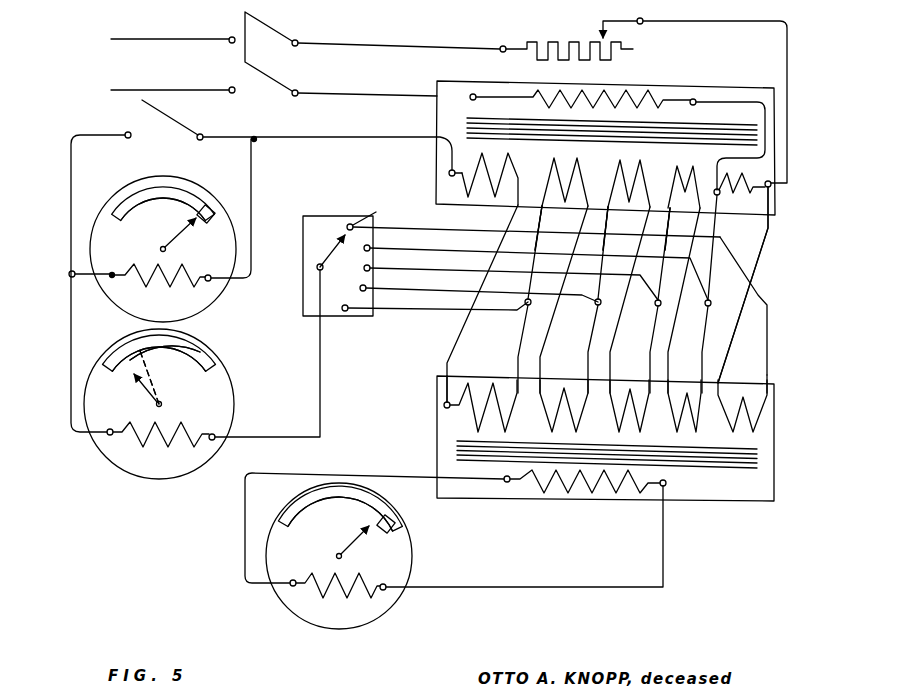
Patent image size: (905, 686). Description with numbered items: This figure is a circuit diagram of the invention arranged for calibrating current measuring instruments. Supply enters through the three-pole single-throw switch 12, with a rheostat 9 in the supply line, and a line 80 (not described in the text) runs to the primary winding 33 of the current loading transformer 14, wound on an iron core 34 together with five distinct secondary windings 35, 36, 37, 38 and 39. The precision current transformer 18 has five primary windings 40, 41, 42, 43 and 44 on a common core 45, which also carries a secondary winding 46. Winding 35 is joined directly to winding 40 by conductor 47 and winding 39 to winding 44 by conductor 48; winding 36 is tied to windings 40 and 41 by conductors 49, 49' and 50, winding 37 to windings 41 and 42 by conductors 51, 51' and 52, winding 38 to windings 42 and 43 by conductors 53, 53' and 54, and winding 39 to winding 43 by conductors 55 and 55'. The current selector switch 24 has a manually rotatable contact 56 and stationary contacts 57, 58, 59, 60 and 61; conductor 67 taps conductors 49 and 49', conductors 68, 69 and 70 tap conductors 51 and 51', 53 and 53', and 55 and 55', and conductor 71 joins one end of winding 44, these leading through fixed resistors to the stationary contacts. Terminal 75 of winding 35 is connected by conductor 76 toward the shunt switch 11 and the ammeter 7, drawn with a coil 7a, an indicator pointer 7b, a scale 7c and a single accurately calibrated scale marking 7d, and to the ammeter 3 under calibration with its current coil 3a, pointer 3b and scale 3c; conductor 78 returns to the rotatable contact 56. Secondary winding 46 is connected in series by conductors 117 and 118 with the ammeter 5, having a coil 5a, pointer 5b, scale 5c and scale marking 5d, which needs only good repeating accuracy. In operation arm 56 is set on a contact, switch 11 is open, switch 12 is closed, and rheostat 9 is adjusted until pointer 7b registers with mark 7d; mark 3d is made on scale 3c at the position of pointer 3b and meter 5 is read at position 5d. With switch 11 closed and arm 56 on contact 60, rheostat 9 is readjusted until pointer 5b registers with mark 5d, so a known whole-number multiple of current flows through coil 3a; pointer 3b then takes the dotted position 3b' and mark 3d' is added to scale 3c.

The ammeter 3 is at (142, 466).
The current coil 3a is at (168, 443).
The pointer 3b is at (163, 394).
The pointer position 3b' is at (162, 376).
The scale 3c is at (200, 372).
The mark 3d is at (147, 353).
The mark 3d' is at (181, 344).
The ammeter 5 is at (413, 556).
The coil 5a is at (347, 592).
The pointer 5b is at (350, 546).
The scale 5c is at (342, 506).
The scale marking 5d is at (390, 523).
The ammeter 7 is at (187, 176).
The meter resistor 7a is at (162, 281).
The indicator pointer 7b is at (182, 228).
The scale 7c is at (176, 198).
The scale marking 7d is at (211, 209).
The rheostat 9 is at (562, 37).
The shunt switch 11 is at (186, 131).
The three pole single throw switch 12 is at (264, 82).
The current loading transformer 14 is at (446, 83).
The precision current transformer 18 is at (440, 403).
The current selector switch 24 is at (342, 215).
The primary winding 33 is at (640, 88).
The iron core 34 is at (474, 118).
The secondary winding 35 is at (521, 192).
The secondary winding 36 is at (588, 190).
The secondary winding 37 is at (650, 190).
The secondary winding 38 is at (702, 158).
The secondary winding 39 is at (756, 195).
The primary winding 40 is at (518, 402).
The primary winding 41 is at (586, 410).
The primary winding 42 is at (648, 412).
The primary winding 43 is at (708, 430).
The primary winding 44 is at (760, 434).
The common core 45 is at (607, 465).
The secondary winding 46 is at (578, 492).
The conductor 47 is at (460, 348).
The conductor 48 is at (730, 362).
The conductor 49 is at (518, 299).
The conductor 49' is at (558, 228).
The conductor 50 is at (547, 340).
The conductor 51 is at (584, 300).
The conductor 51' is at (623, 228).
The conductor 52 is at (625, 342).
The conductor 53 is at (643, 300).
The conductor 53' is at (682, 229).
The conductor 54 is at (668, 386).
The conductor 55 is at (700, 294).
The conductor 55' is at (743, 285).
The manually rotatable contact 56 is at (340, 240).
The stationary contact 57 is at (343, 300).
The stationary contact 58 is at (360, 284).
The stationary contact 59 is at (363, 269).
The stationary contact 60 is at (364, 246).
The stationary contact 61 is at (377, 215).
The conductor 67 is at (510, 312).
The conductor 68 is at (585, 307).
The conductor 69 is at (648, 300).
The conductor 70 is at (698, 300).
The conductor 71 is at (753, 322).
The terminal 75 is at (446, 173).
The conductor 76 is at (363, 138).
The conductor 78 is at (318, 350).
The conductor 80 is at (400, 92).
The conductor 117 is at (388, 472).
The conductor 118 is at (548, 586).